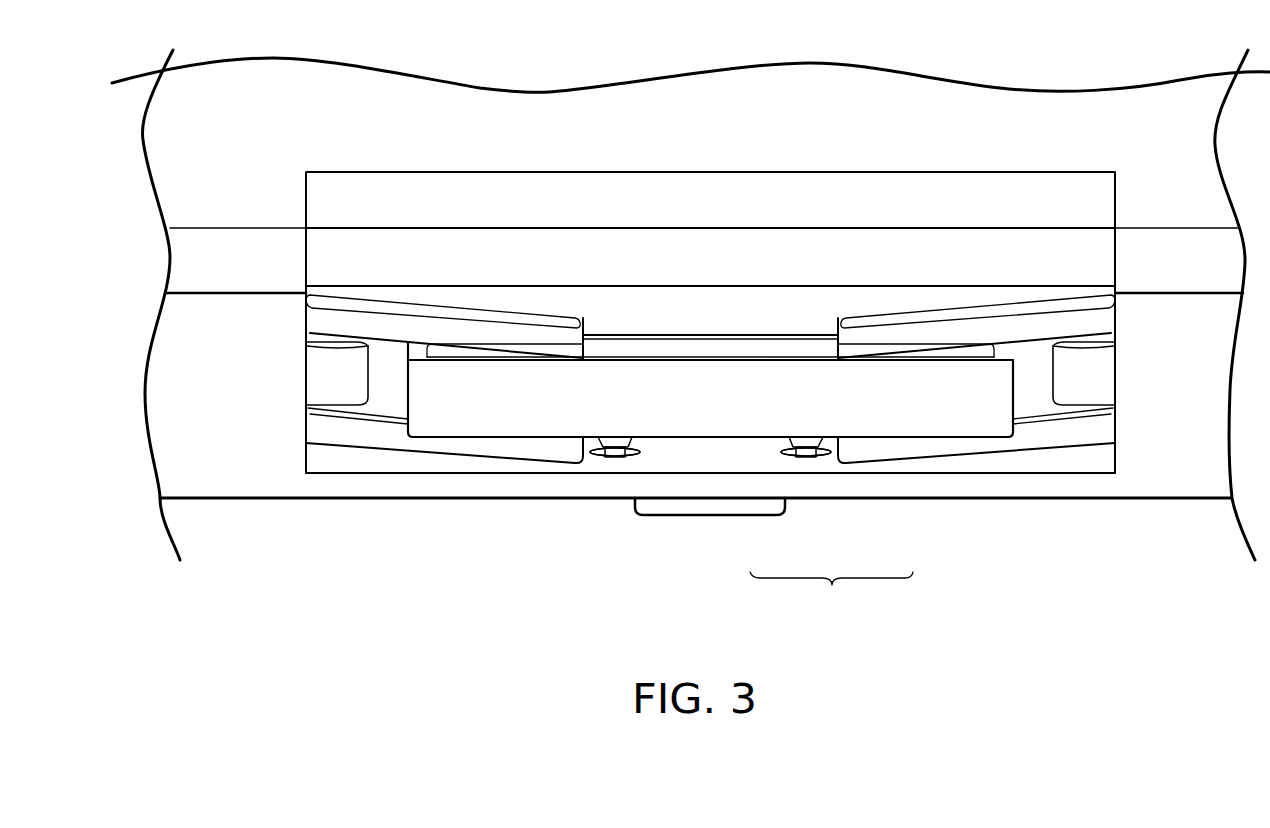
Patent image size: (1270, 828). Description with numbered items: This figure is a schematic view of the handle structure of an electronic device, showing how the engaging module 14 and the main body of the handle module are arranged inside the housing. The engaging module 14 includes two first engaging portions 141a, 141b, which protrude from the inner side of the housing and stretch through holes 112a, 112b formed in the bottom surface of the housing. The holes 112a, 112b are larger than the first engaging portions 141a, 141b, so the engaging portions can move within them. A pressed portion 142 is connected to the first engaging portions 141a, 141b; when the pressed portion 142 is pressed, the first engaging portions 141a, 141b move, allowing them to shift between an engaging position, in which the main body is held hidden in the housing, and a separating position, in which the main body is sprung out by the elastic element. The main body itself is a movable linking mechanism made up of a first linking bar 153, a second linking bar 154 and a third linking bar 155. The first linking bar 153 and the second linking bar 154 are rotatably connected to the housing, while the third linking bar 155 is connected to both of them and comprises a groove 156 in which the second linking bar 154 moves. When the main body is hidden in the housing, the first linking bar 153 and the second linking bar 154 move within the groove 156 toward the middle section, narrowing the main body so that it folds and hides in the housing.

The engaging module 14 is at (831, 595).
The first engaging portion 141a is at (632, 453).
The first engaging portion 141b is at (820, 455).
The pressed portion 142 is at (762, 512).
The hole 112a is at (592, 452).
The hole 112b is at (782, 452).
The first linking bar 153 is at (380, 438).
The second linking bar 154 is at (1040, 437).
The third linking bar 155 is at (517, 413).
The groove 156 is at (708, 347).